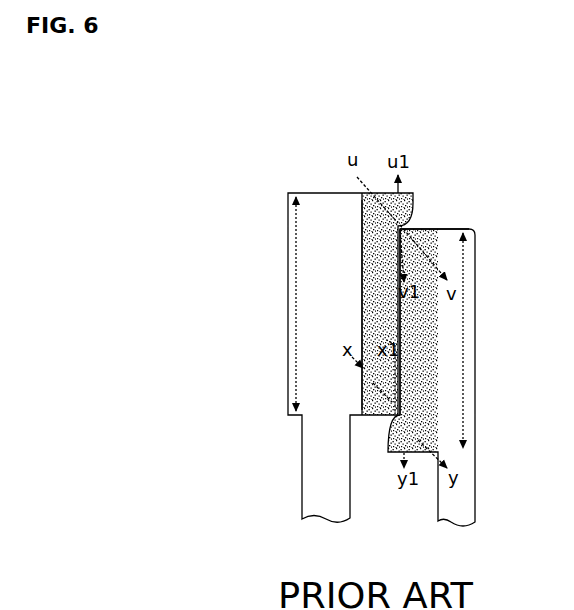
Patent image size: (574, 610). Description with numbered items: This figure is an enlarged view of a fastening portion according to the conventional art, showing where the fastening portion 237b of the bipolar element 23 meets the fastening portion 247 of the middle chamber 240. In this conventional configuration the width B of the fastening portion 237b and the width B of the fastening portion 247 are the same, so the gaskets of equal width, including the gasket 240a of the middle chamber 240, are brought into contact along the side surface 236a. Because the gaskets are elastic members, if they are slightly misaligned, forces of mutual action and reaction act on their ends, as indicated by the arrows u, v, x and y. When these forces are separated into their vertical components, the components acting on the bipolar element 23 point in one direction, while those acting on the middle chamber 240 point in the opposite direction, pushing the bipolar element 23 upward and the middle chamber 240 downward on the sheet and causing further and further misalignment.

The bipolar element 23 is at (288, 138).
The fastening portion of the bipolar element 237b is at (373, 160).
The side surface of first member 236a is at (362, 278).
The middle chamber 240 is at (478, 145).
The gasket 240a is at (425, 358).
The fastening portion of the middle chamber 247 is at (425, 208).